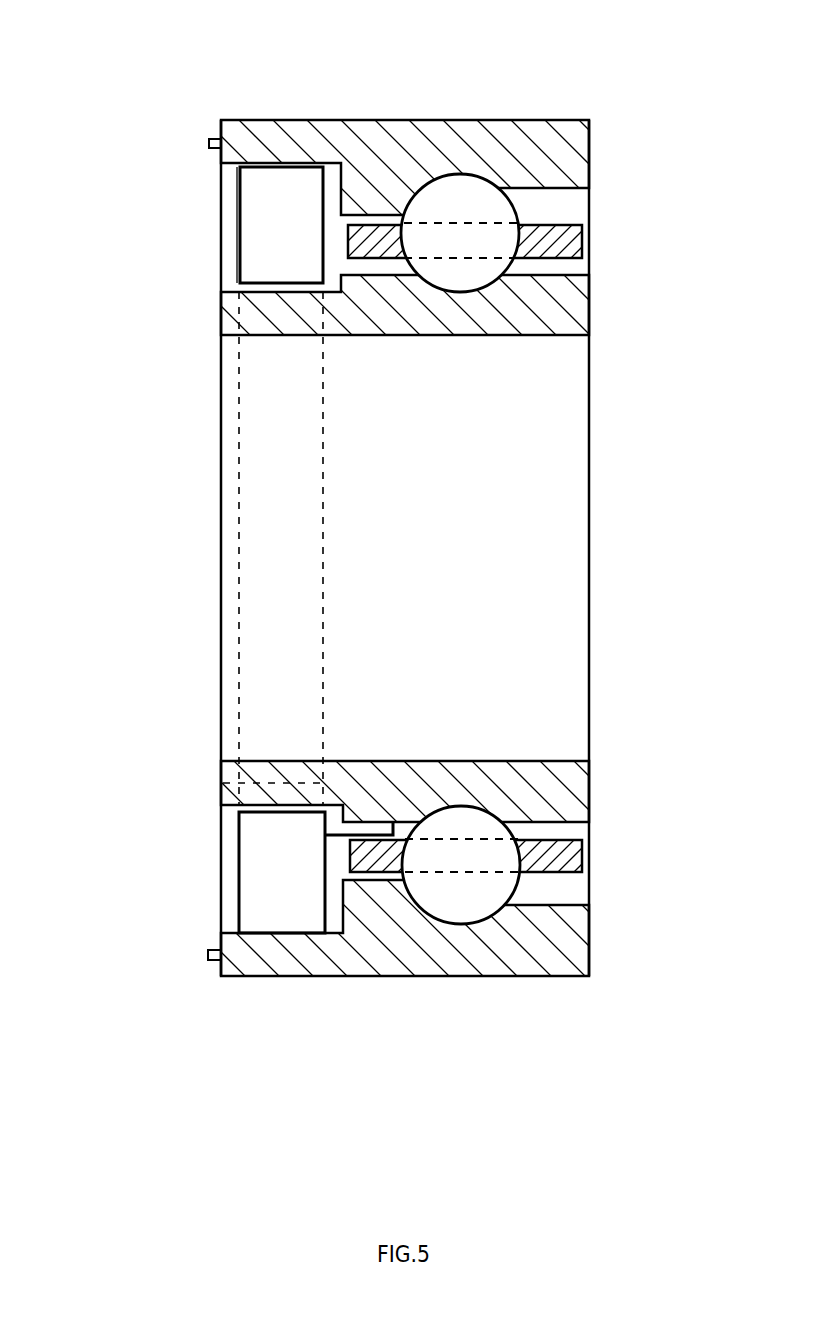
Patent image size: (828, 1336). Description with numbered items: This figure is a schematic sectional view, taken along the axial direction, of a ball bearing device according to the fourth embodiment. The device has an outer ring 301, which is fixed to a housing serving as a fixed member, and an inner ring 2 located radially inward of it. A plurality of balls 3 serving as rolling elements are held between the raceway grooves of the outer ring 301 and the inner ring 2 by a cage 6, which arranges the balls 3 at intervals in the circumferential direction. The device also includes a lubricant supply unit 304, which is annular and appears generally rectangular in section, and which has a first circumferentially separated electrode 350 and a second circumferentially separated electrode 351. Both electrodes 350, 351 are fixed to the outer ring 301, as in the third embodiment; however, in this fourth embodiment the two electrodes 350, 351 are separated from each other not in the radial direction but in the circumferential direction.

The outer ring 301 is at (497, 143).
The lubricant supply unit 304 is at (281, 188).
The first circumferentially separated electrode 350 is at (207, 143).
The second circumferentially separated electrode 351 is at (208, 955).
The balls 3 is at (495, 208).
The cage 6 is at (582, 238).
The inner ring 2 is at (573, 308).